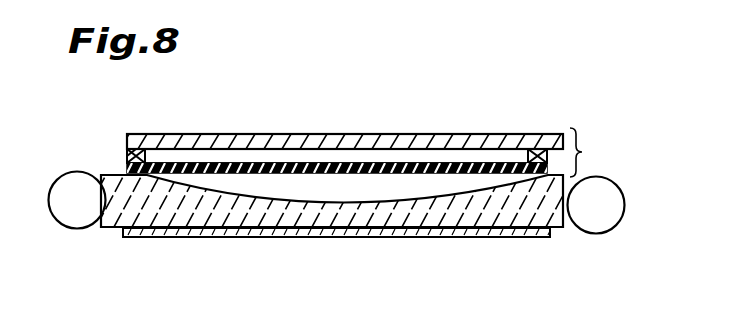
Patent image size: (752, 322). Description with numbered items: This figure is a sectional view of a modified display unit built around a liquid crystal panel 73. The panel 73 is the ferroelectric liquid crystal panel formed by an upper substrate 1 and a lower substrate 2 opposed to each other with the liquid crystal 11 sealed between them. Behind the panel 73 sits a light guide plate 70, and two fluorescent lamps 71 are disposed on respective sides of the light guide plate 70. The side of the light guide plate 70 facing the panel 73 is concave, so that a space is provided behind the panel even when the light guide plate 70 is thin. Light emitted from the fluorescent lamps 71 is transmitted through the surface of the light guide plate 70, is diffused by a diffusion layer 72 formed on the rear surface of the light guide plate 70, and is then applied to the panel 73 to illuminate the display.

The upper substrate 1 is at (497, 140).
The lower substrate 2 is at (450, 165).
The liquid crystal 11 is at (370, 153).
The light guide plate 70 is at (505, 213).
The fluorescent lamps 71 is at (75, 217).
The diffusion layer 72 is at (362, 237).
The liquid crystal panel 73 is at (598, 152).